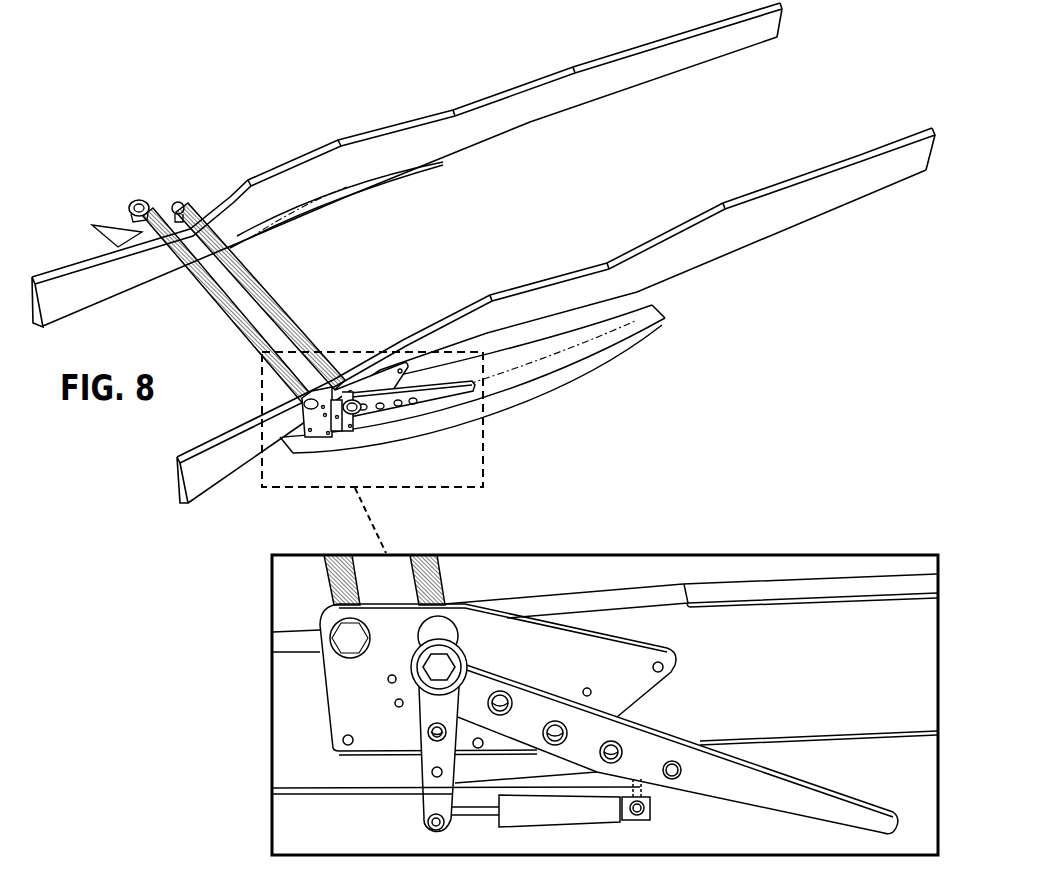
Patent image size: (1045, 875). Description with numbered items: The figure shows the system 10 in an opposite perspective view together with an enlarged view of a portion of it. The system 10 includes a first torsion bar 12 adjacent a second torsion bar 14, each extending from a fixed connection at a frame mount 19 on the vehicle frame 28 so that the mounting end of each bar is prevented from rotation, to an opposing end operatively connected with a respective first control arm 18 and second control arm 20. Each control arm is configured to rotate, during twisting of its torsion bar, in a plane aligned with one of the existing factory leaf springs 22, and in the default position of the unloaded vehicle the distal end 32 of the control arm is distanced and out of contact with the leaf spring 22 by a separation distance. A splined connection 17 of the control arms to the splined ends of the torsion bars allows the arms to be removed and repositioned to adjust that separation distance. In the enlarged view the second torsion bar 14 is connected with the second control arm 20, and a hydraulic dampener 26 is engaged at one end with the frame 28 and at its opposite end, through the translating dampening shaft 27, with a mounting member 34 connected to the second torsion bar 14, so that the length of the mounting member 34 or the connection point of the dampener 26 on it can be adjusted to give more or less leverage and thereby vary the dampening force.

The system 10 is at (256, 140).
The first torsion bar 12 is at (197, 283).
The second torsion bar 14 is at (232, 258).
The splined connection 17 is at (437, 668).
The first control arm 18 is at (129, 203).
The frame mount 19 is at (175, 203).
The second control arm 20 is at (478, 683).
The leaf spring 22 is at (350, 197).
The second hydraulic dampener 26 is at (577, 818).
The translating dampening shaft 27 is at (484, 815).
The frame 28 is at (530, 104).
The distal end 32 is at (893, 817).
The mounting member 34 is at (430, 763).